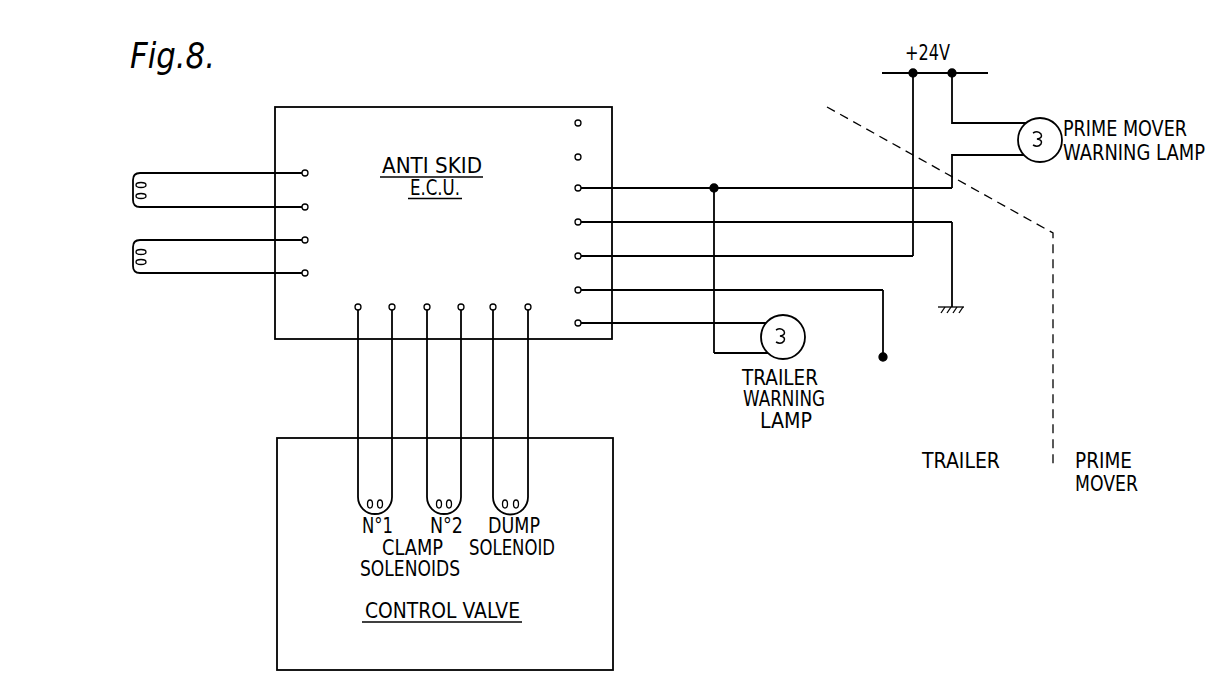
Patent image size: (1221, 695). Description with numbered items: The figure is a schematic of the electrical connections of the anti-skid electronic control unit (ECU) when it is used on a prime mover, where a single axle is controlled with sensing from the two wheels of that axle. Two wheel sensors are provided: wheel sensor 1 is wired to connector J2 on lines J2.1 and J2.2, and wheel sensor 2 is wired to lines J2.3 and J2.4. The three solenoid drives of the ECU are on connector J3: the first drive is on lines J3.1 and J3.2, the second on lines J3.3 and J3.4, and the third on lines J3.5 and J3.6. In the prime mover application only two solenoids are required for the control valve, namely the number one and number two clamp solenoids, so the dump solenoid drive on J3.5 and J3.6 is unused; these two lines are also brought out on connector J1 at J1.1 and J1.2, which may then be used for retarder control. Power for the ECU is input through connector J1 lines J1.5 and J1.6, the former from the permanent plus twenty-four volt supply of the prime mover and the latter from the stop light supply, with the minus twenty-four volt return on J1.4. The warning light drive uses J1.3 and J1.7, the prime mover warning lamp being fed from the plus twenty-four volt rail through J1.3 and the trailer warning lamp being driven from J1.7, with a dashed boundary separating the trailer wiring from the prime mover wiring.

The wheel sensor 1 is at (171, 191).
The wheel sensor 2 is at (172, 261).
The connector J1 line 1 J1.1 is at (559, 123).
The connector J1 line 2 J1.2 is at (559, 157).
The connector J1 line 3 J1.3 is at (745, 264).
The connector J1 line 4 J1.4 is at (757, 276).
The connector J1 line 5 J1.5 is at (727, 171).
The connector J1 line 6 J1.6 is at (747, 344).
The connector J1 line 7 J1.7 is at (653, 323).
The connector J2 line 1 J2.1 is at (324, 173).
The connector J2 line 2 J2.2 is at (325, 207).
The connector J2 line 3 J2.3 is at (325, 240).
The connector J2 line 4 J2.4 is at (325, 273).
The connector J3 line 1 J3.1 is at (357, 304).
The connector J3 line 2 J3.2 is at (395, 387).
The connector J3 line 3 J3.3 is at (428, 304).
The connector J3 line 4 J3.4 is at (464, 387).
The connector J3 line 5 J3.5 is at (493, 304).
The connector J3 line 6 J3.6 is at (527, 304).